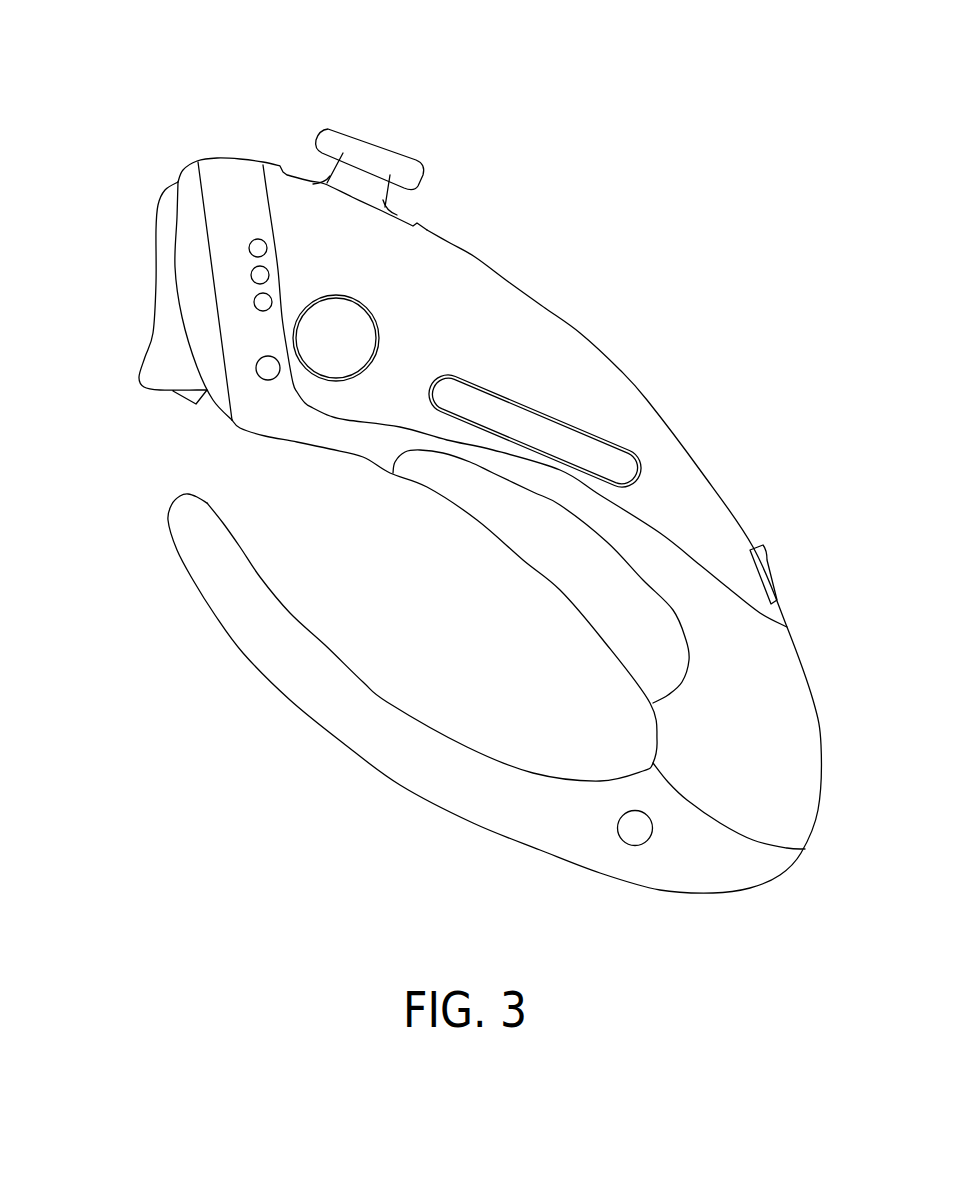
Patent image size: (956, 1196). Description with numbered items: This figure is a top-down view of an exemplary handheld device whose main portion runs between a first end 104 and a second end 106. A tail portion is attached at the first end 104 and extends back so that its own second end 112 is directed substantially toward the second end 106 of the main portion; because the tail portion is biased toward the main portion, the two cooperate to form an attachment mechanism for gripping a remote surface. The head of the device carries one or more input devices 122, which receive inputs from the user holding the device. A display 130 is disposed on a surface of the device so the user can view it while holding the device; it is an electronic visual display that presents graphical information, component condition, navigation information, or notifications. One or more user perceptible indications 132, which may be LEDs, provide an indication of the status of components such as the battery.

The first end 104 is at (713, 893).
The second end 106 is at (183, 167).
The second end 112 is at (166, 503).
The input devices 122 is at (377, 145).
The display 130 is at (552, 431).
The user perceptible indications 132 is at (267, 381).